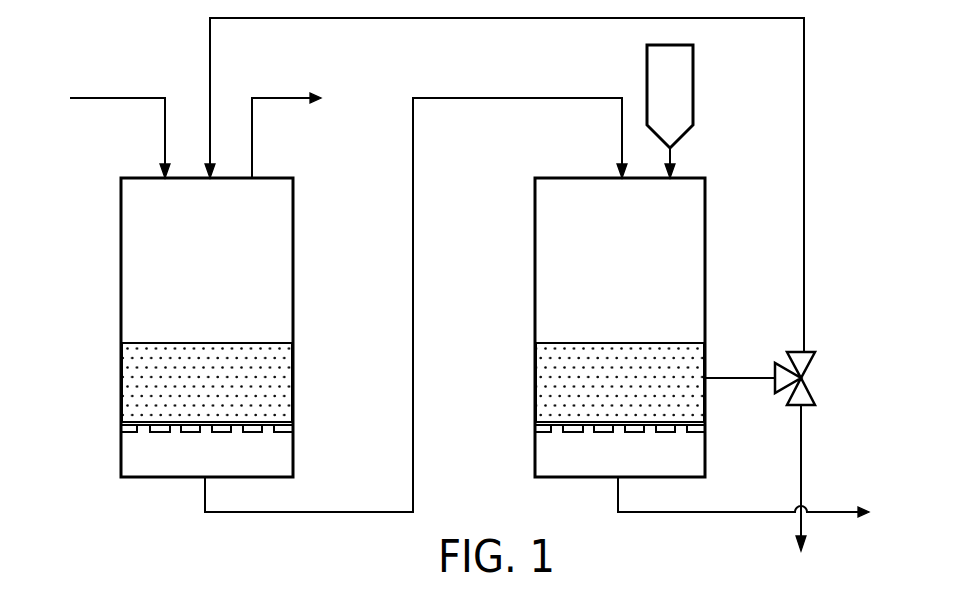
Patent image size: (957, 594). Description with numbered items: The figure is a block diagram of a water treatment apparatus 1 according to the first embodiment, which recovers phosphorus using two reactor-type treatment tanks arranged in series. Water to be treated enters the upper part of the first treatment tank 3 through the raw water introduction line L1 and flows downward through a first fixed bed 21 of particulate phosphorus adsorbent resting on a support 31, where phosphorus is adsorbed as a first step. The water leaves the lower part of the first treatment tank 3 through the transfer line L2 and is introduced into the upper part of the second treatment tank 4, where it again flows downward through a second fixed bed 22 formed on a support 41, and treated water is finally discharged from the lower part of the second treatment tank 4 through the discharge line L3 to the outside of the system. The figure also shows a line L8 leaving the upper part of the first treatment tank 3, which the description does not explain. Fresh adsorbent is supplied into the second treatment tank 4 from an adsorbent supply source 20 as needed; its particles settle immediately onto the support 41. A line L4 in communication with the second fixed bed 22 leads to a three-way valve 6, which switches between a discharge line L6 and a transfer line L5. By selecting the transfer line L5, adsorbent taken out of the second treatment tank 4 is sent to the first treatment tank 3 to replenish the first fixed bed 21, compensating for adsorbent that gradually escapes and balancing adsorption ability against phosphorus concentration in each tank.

The water treatment apparatus 1 is at (180, 42).
The first treatment tank 3 is at (121, 235).
The second treatment tank 4 is at (535, 235).
The three-way valve 6 is at (817, 388).
The adsorbent supply source 20 is at (694, 78).
The first fixed bed 21 is at (127, 397).
The second fixed bed 22 is at (541, 397).
The support 31 is at (158, 434).
The support 41 is at (571, 434).
The raw water introduction line L1 is at (108, 97).
The transfer line L2 is at (326, 513).
The discharge line L3 is at (734, 513).
The line L4 is at (740, 380).
The transfer line L5 is at (805, 95).
The discharge line L6 is at (802, 457).
The exhaust line L8 is at (280, 97).